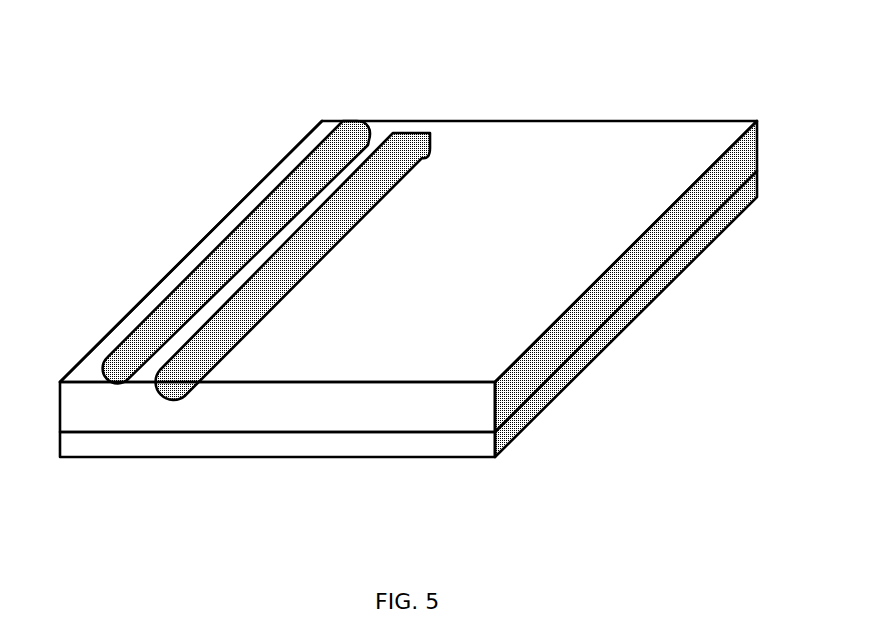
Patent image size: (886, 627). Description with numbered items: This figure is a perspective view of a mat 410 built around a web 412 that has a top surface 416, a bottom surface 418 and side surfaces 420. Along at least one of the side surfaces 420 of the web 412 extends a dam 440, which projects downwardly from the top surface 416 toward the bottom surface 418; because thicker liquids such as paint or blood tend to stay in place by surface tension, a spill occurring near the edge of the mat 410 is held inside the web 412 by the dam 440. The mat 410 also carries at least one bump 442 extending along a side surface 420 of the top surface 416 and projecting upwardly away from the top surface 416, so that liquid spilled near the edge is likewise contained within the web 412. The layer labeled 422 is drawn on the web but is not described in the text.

The mat 410 is at (500, 74).
The web 412 is at (730, 190).
The top surface 416 is at (578, 179).
The bottom surface 418 is at (583, 357).
The side surface 420 is at (293, 160).
The lower layer 422 is at (465, 442).
The dam 440 is at (180, 380).
The bump 442 is at (152, 350).